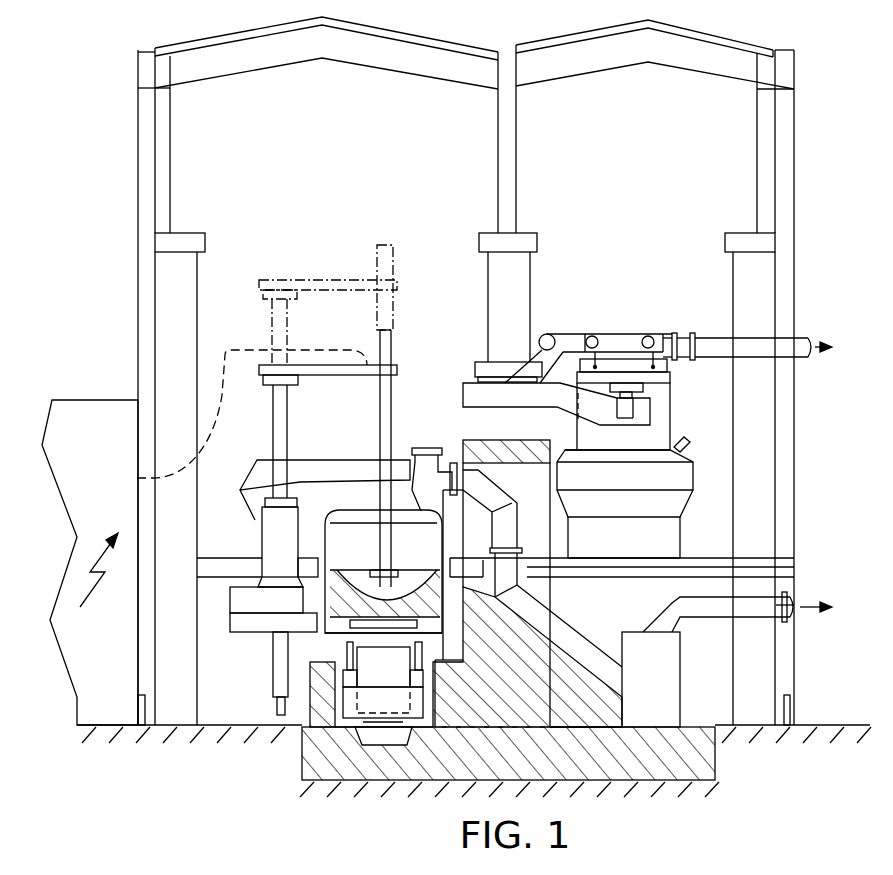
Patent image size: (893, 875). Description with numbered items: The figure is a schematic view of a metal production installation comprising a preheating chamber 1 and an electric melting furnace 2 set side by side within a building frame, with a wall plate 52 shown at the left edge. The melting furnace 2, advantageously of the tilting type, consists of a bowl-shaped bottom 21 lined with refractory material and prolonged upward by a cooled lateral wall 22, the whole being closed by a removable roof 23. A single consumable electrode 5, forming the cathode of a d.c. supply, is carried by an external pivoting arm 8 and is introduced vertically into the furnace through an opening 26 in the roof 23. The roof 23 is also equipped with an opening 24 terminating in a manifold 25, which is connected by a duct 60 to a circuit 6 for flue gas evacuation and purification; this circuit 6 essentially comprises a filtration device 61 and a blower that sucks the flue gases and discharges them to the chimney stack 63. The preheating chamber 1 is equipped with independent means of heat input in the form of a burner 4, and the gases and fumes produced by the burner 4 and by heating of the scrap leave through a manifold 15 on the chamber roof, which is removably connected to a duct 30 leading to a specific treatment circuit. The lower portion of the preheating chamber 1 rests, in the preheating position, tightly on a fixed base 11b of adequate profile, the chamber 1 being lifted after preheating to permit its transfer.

The preheating chamber 1 is at (706, 473).
The electric melting furnace 2 is at (314, 596).
The burner 4 is at (683, 440).
The consumable electrode 5 is at (387, 400).
The flue gas evacuation and purification circuit 6 is at (706, 692).
The pivoting arm 8 is at (340, 365).
The fixed base 11b is at (682, 541).
The manifold 15 is at (663, 337).
The bowl-shaped bottom 21 is at (347, 612).
The cooled lateral wall 22 is at (324, 552).
The removable roof 23 is at (343, 510).
The opening 24 is at (400, 508).
The manifold 25 is at (450, 463).
The opening 26 is at (375, 510).
The duct 30 is at (703, 333).
The wall plate 52 is at (90, 422).
The duct 60 is at (452, 460).
The filtration device 61 is at (635, 643).
The chimney stack 63 is at (795, 618).